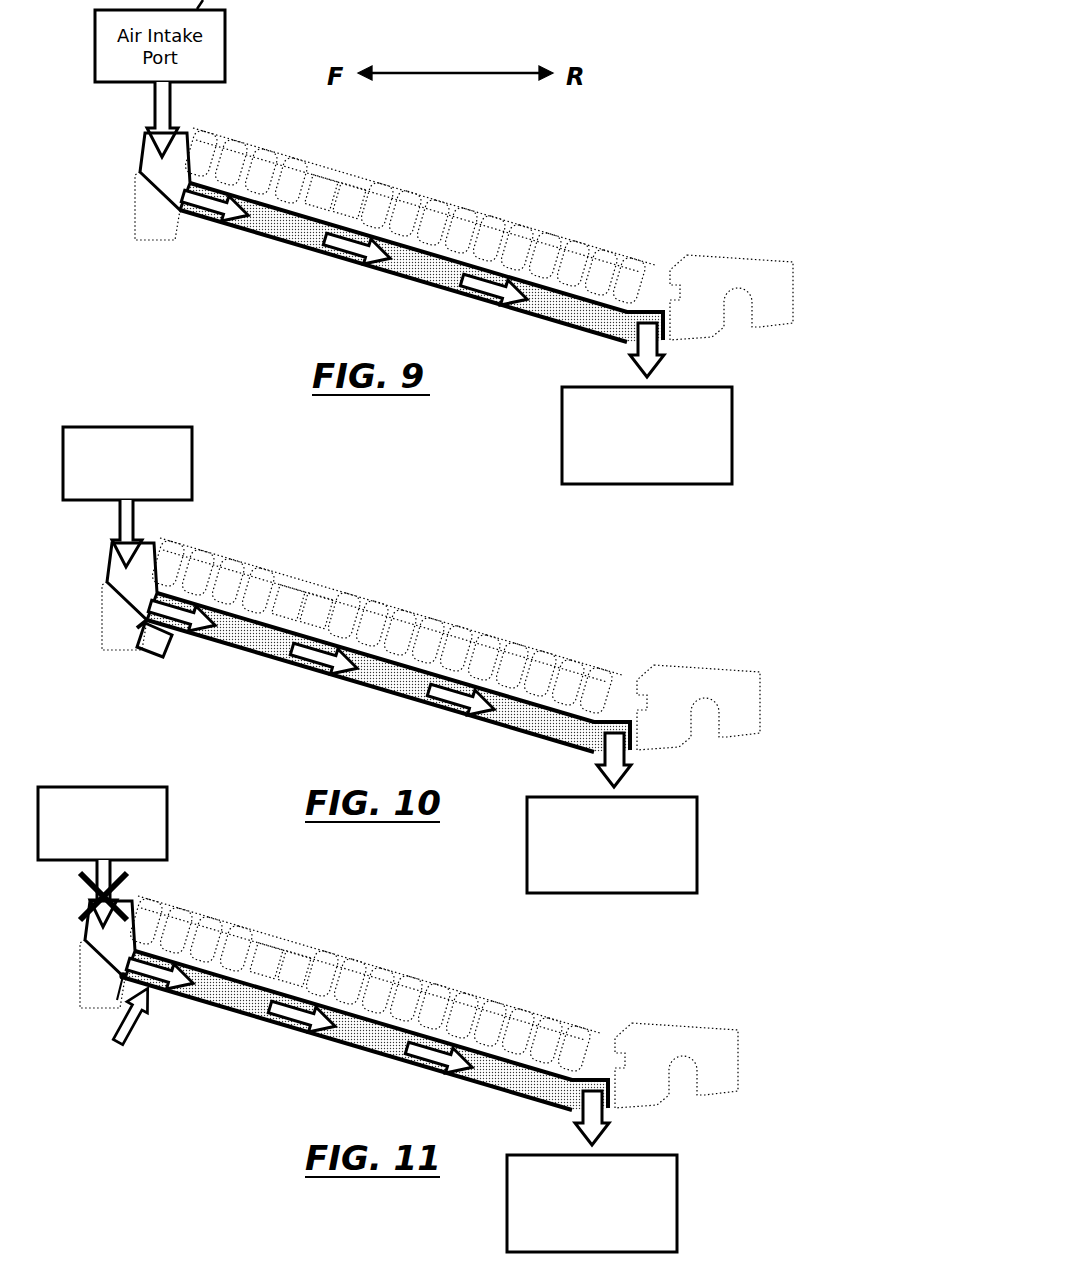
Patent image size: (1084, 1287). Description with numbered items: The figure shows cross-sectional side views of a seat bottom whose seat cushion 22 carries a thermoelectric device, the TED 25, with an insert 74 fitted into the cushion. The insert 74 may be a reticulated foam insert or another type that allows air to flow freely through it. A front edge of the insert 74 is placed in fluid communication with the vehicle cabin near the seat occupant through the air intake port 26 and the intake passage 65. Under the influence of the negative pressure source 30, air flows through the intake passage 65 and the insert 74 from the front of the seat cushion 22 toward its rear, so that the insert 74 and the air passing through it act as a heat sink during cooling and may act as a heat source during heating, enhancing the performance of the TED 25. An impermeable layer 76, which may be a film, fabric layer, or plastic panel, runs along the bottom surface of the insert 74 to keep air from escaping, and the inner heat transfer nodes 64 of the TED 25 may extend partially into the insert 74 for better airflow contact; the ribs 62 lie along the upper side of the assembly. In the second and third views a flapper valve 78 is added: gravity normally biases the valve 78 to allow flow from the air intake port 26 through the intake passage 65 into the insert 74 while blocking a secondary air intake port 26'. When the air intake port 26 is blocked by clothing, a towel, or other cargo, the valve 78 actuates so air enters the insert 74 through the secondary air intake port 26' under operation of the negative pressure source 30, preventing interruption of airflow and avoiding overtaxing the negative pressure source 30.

In FIG. 9, the seat cushion 22 is at (717, 260).
In FIG. 10, the seat cushion 22 is at (683, 670).
In FIG. 11, the seat cushion 22 is at (662, 1028).
In FIG. 9, the TED 25 is at (412, 196).
In FIG. 10, the TED 25 is at (376, 608).
In FIG. 11, the TED 25 is at (354, 966).
In FIG. 10, the air intake port 26 is at (150, 480).
In FIG. 11, the air intake port 26 is at (133, 857).
In FIG. 10, the secondary air intake port 26' is at (107, 651).
In FIG. 11, the secondary air intake port 26' is at (91, 1012).
In FIG. 9, the negative pressure source 30 is at (733, 413).
In FIG. 10, the negative pressure source 30 is at (698, 823).
In FIG. 11, the negative pressure source 30 is at (678, 1183).
In FIG. 9, the ribs 62 is at (438, 200).
In FIG. 10, the ribs 62 is at (405, 610).
In FIG. 11, the ribs 62 is at (385, 968).
In FIG. 9, the inner heat transfer nodes 64 is at (433, 230).
In FIG. 10, the inner heat transfer nodes 64 is at (398, 640).
In FIG. 11, the inner heat transfer nodes 64 is at (376, 998).
In FIG. 9, the intake passage 65 is at (181, 137).
In FIG. 10, the intake passage 65 is at (147, 545).
In FIG. 11, the intake passage 65 is at (127, 903).
In FIG. 9, the insert 74 is at (303, 257).
In FIG. 10, the insert 74 is at (303, 670).
In FIG. 11, the insert 74 is at (286, 1028).
In FIG. 9, the impermeable layer 76 is at (253, 238).
In FIG. 10, the impermeable layer 76 is at (258, 655).
In FIG. 11, the impermeable layer 76 is at (240, 1012).
In FIG. 10, the valve 78 is at (177, 640).
In FIG. 11, the valve 78 is at (160, 1005).